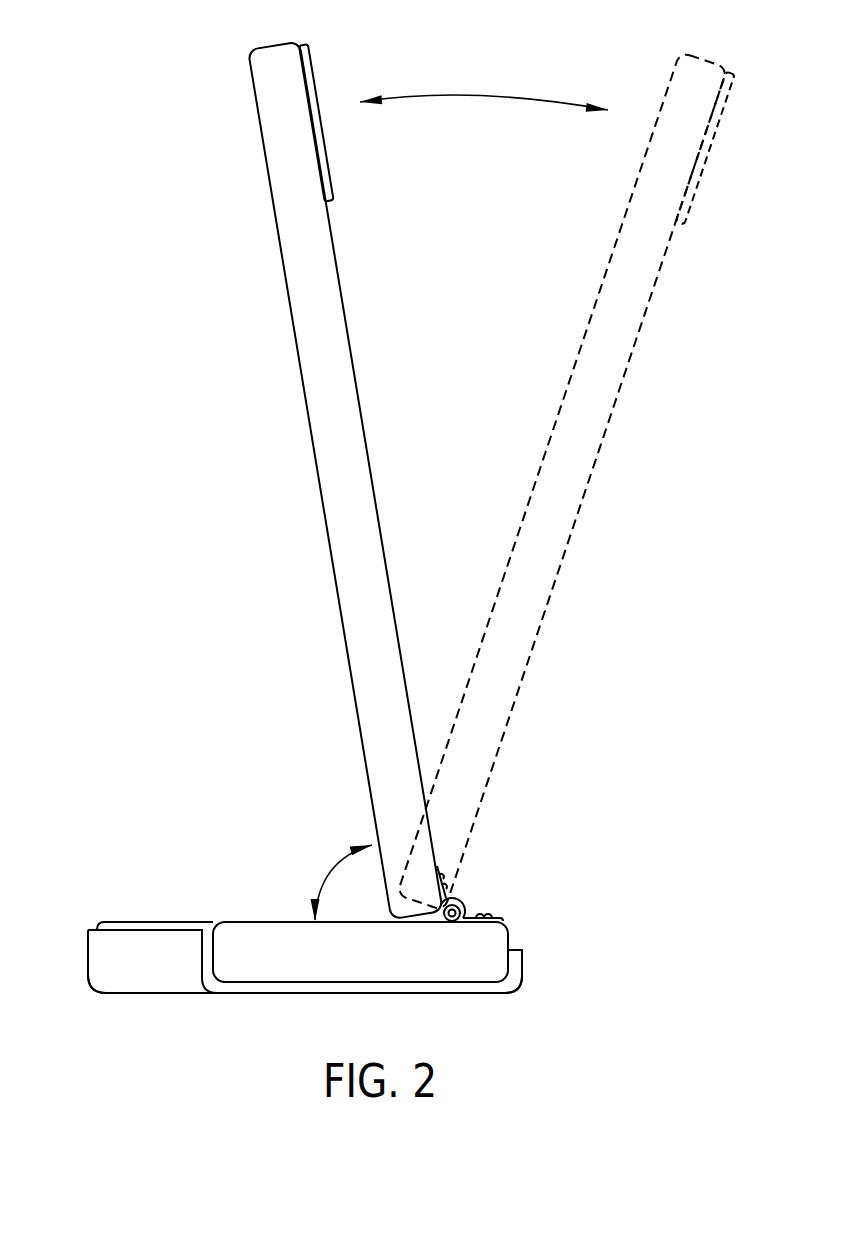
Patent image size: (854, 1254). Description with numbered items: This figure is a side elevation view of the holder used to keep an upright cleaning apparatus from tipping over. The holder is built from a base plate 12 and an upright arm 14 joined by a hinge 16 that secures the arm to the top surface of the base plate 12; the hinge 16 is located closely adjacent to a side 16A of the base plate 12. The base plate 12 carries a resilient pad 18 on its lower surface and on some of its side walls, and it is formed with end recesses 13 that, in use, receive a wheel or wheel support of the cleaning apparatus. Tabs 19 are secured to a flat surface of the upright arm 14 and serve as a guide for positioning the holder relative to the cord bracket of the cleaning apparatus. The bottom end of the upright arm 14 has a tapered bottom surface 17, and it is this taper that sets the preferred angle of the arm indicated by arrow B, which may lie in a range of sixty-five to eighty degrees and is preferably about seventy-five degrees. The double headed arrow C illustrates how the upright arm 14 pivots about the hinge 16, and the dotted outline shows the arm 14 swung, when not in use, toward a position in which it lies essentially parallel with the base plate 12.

The base plate 12 is at (243, 922).
The end recesses 13 is at (142, 965).
The upright arm 14 is at (277, 227).
The hinge 16 is at (472, 908).
The side of the base plate 16A is at (508, 932).
The tapered bottom surface 17 is at (415, 923).
The resilient pad 18 is at (275, 995).
The tabs 19 is at (317, 83).
The arrow B is at (333, 866).
The double headed arrow C is at (472, 95).